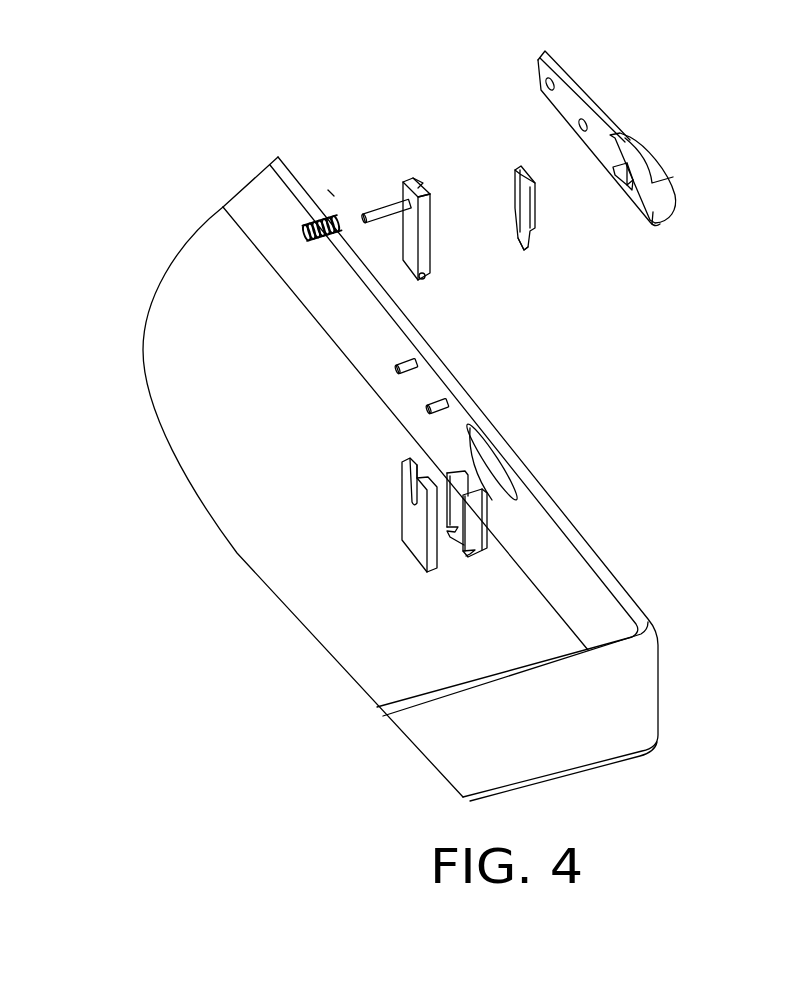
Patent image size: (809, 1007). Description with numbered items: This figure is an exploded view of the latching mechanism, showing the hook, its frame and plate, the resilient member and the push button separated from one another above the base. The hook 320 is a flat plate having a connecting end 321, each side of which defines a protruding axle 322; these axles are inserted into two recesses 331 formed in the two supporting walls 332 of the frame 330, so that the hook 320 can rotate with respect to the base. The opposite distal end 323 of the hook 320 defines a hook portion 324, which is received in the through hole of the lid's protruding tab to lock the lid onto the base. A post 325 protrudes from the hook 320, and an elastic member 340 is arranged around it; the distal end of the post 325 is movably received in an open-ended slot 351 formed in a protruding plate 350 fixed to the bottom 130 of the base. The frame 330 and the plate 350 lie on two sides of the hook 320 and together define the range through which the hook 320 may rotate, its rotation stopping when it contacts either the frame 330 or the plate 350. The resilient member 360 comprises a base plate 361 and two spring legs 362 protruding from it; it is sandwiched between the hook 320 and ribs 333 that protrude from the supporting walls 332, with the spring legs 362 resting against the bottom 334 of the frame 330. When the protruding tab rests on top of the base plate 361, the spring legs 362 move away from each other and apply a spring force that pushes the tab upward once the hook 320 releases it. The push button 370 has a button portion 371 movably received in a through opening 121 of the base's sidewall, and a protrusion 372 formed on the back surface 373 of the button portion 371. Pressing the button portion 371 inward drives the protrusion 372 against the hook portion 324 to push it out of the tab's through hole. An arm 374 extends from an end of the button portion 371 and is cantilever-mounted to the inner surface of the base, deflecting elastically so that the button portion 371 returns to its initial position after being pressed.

The bottom 130 is at (413, 360).
The through opening 121 is at (478, 438).
The hook 320 is at (467, 55).
The connecting end 321 is at (363, 205).
The protruding axle 322 is at (427, 273).
The distal end 323 is at (410, 200).
The hook portion 324 is at (429, 192).
The post 325 is at (330, 193).
The frame 330 is at (607, 403).
The recess 331 is at (480, 530).
The supporting wall 332 is at (466, 470).
The rib 333 is at (480, 480).
The bottom 334 is at (467, 553).
The elastic member 340 is at (305, 220).
The protruding plate 350 is at (413, 538).
The open-ended slot 351 is at (413, 490).
The resilient member 360 is at (543, 236).
The base plate 361 is at (527, 208).
The spring leg 362 is at (522, 237).
The push button 370 is at (667, 41).
The button portion 371 is at (657, 178).
The protrusion 372 is at (620, 137).
The back surface 373 is at (652, 226).
The arm 374 is at (570, 103).